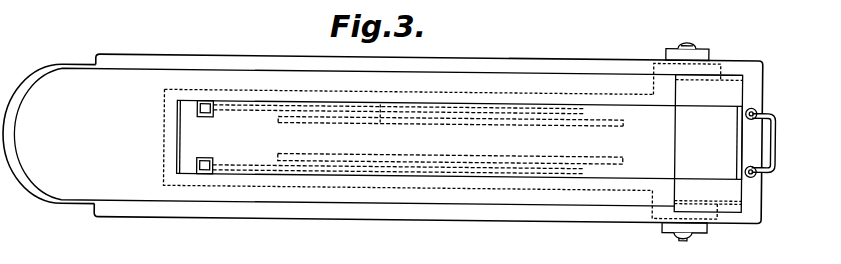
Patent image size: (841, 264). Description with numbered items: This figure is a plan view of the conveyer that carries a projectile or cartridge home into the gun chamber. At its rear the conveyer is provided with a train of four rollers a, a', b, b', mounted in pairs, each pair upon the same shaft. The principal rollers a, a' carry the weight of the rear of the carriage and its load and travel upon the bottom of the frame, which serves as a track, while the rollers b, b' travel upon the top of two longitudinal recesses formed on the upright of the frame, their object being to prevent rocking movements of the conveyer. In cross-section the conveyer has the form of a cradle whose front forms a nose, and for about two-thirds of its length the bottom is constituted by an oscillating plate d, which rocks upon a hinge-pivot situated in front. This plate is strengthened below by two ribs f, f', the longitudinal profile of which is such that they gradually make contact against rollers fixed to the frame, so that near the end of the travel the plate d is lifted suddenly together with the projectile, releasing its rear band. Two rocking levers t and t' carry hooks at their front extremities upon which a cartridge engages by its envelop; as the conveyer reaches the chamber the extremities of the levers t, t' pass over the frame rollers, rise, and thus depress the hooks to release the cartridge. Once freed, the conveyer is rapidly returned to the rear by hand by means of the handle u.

The principal roller a is at (698, 64).
The principal roller a' is at (688, 219).
The roller b is at (694, 37).
The roller b' is at (698, 234).
The rocking lever t is at (460, 139).
The rocking lever t' is at (207, 137).
The oscillating plate d is at (451, 134).
The rib f is at (429, 124).
The rib f' is at (431, 158).
The handle u is at (771, 134).